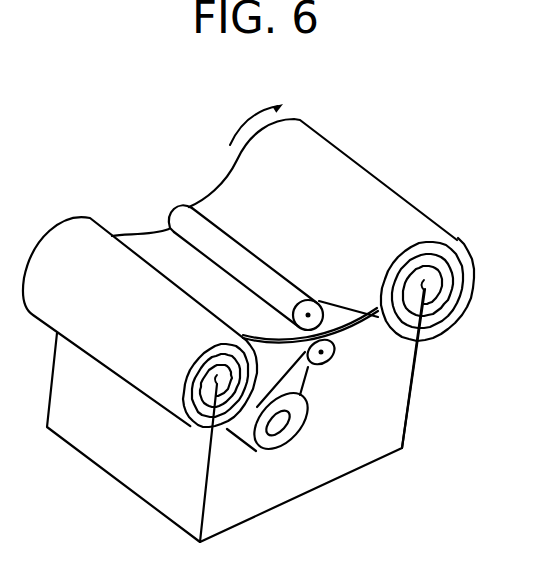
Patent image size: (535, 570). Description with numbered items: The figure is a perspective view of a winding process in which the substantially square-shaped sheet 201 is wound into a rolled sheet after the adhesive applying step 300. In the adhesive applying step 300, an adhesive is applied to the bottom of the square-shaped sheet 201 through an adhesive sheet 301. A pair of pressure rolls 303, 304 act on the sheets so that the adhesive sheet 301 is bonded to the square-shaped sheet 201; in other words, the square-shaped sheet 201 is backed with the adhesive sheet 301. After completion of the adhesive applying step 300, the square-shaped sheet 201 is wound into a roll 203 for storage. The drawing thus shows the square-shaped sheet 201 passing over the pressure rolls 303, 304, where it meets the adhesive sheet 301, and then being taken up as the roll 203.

The adhesive applying step 300 is at (160, 124).
The substantially square-shaped sheet 201 is at (120, 355).
The roll 203 is at (392, 203).
The pressure roll 304 is at (186, 214).
The pressure roll 303 is at (334, 347).
The adhesive sheet 301 is at (278, 365).